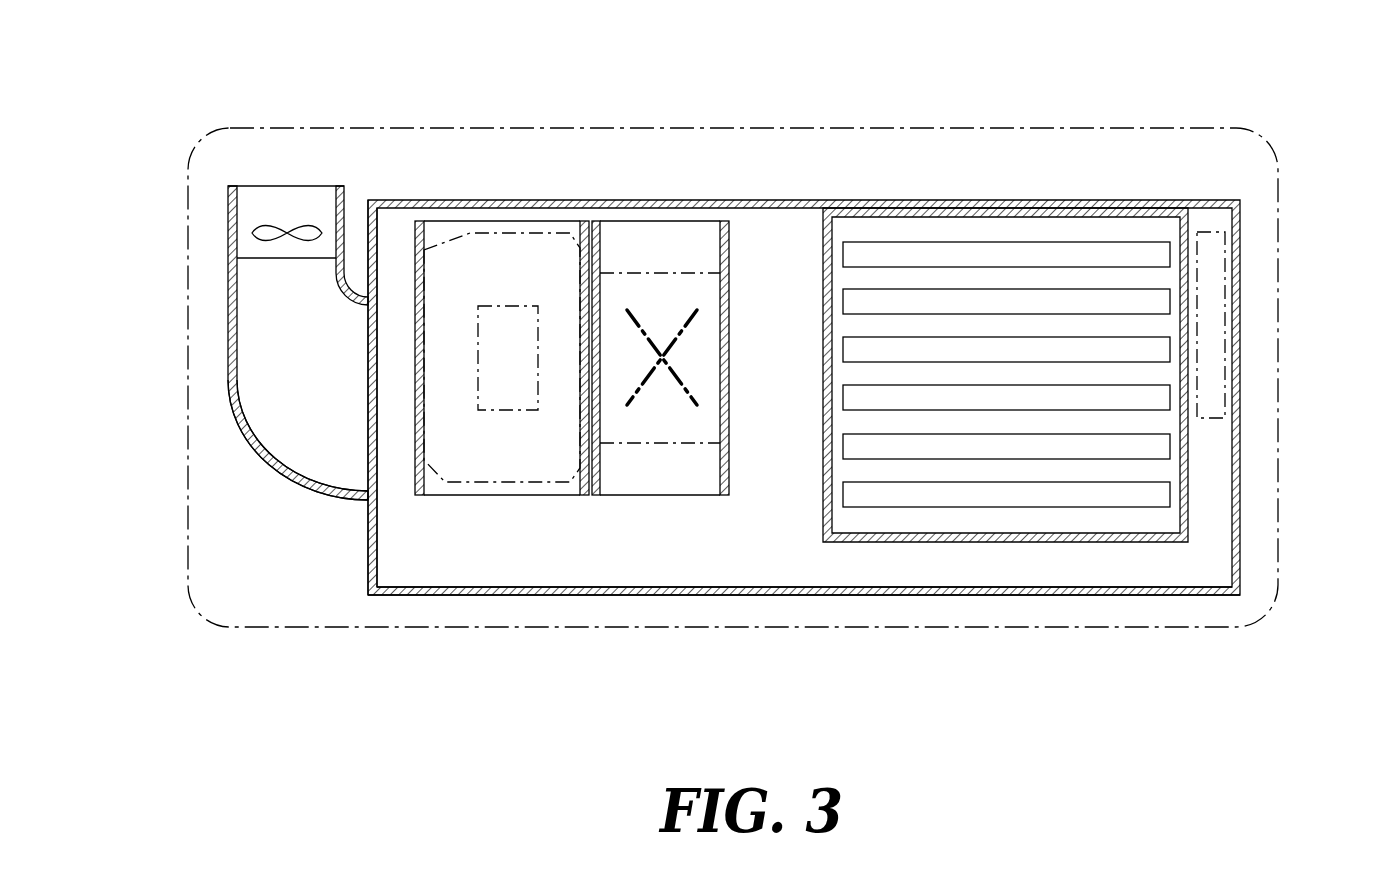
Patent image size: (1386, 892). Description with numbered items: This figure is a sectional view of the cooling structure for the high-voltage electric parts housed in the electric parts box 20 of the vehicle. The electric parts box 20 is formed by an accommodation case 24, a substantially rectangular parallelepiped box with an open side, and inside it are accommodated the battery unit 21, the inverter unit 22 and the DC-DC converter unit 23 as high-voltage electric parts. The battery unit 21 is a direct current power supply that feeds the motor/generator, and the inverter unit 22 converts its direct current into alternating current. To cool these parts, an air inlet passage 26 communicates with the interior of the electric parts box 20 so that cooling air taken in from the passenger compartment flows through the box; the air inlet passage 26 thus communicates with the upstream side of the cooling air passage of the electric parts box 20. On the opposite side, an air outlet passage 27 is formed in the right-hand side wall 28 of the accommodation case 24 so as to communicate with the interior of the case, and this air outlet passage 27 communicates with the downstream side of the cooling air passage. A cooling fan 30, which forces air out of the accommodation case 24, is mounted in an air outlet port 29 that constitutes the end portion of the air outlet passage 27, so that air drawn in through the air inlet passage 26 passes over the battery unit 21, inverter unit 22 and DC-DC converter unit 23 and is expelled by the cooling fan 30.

The electric parts box 20 is at (1022, 193).
The battery unit 21 is at (1006, 493).
The inverter unit 22 is at (508, 452).
The DC-DC converter unit 23 is at (660, 418).
The accommodation case 24 is at (775, 594).
The air inlet passage 26 is at (1210, 326).
The air outlet passage 27 is at (268, 368).
The right-hand side wall 28 is at (368, 547).
The air outlet port 29 is at (312, 200).
The cooling fan 30 is at (268, 233).